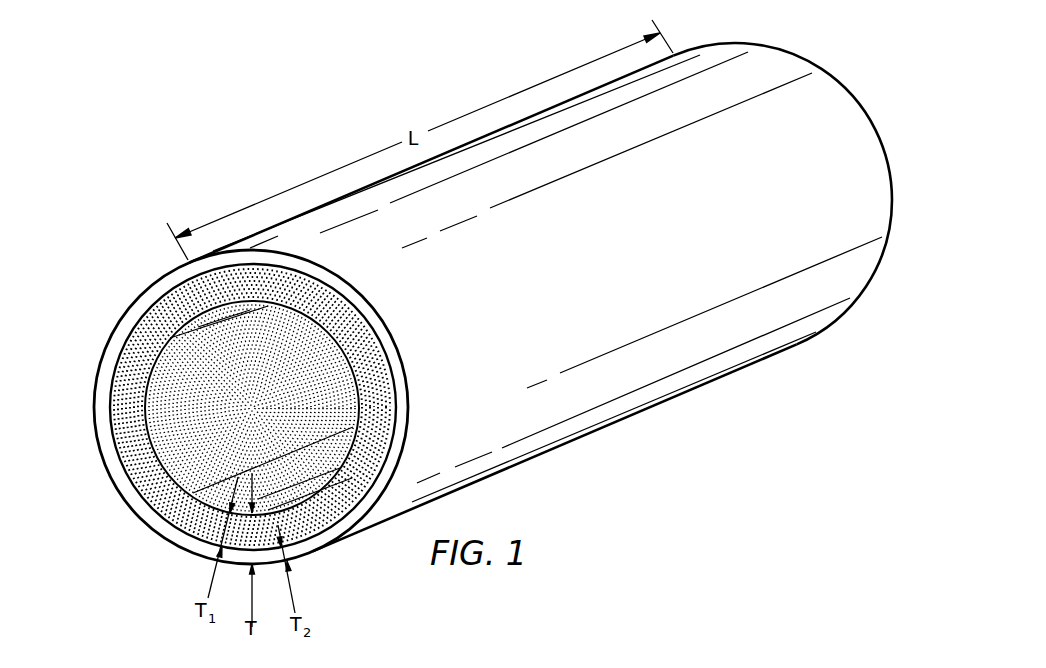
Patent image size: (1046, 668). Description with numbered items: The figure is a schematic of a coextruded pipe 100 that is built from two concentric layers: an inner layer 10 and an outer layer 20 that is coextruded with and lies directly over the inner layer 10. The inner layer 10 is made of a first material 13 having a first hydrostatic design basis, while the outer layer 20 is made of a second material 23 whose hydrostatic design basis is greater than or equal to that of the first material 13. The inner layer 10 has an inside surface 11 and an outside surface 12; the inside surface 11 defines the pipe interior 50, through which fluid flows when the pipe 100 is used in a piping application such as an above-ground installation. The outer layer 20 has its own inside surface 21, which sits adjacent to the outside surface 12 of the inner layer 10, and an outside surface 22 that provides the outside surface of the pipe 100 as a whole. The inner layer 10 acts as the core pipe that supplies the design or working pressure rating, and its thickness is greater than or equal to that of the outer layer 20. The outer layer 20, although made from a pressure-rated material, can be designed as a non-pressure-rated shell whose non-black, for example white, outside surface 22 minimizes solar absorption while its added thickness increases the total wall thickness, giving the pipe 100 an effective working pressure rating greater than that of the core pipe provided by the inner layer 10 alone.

The pipe 100 is at (838, 29).
The inner layer 10 is at (140, 352).
The inside surface 11 is at (155, 412).
The pipe interior 50 is at (158, 432).
The outside surface 12 is at (96, 474).
The outer layer 20 is at (132, 497).
The inside surface 21 is at (180, 312).
The first material 13 is at (393, 386).
The second material 23 is at (402, 416).
The outside surface 22 is at (690, 352).